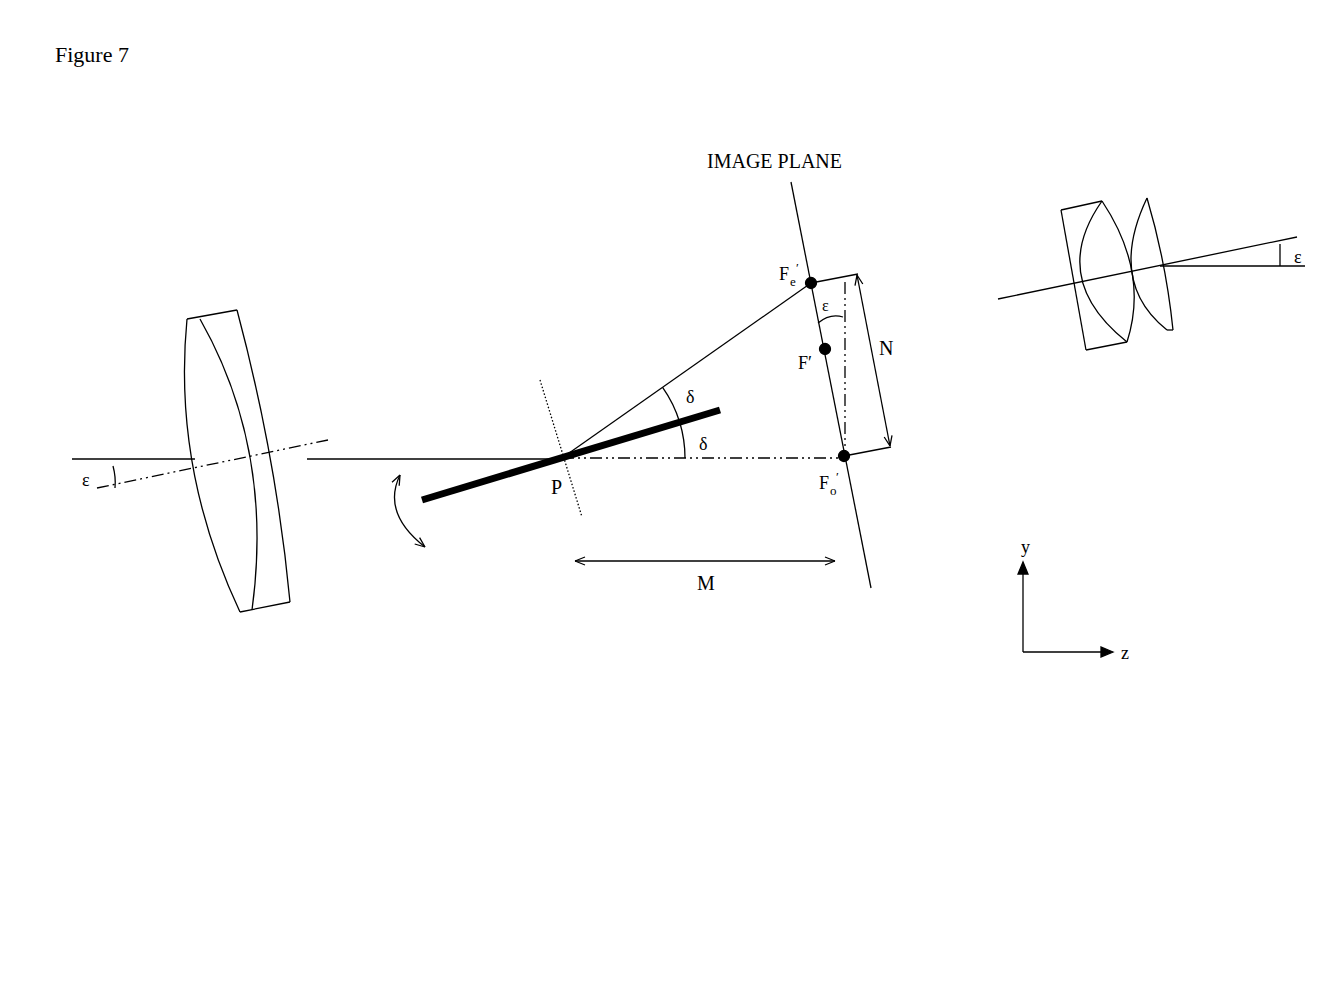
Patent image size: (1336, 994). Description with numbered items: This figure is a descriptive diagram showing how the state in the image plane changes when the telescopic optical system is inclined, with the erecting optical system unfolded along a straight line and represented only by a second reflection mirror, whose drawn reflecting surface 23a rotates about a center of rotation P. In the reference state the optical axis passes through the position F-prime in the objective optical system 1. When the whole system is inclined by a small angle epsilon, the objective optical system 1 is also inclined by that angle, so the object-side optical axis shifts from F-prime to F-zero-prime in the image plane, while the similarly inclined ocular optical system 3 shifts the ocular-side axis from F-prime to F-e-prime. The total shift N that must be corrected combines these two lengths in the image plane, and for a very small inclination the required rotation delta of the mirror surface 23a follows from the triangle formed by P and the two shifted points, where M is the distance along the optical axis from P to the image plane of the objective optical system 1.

The objective optical system 1 is at (258, 292).
The ocular optical system 3 is at (1157, 188).
The reflecting mirror (tilting reflective surface) 23a is at (448, 490).